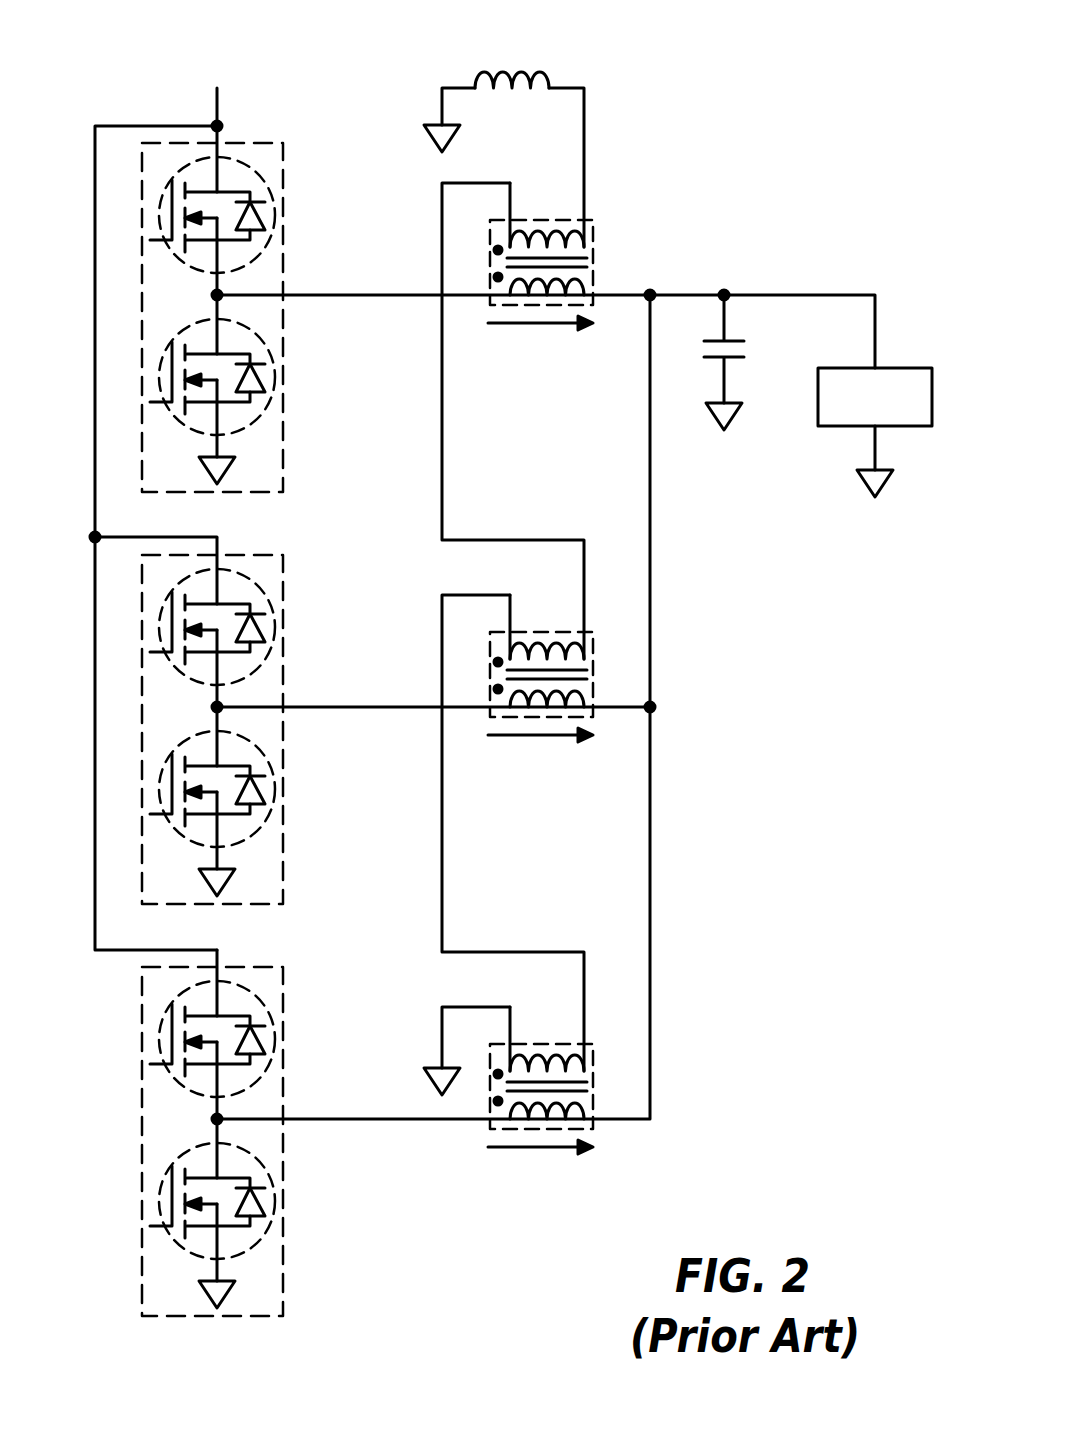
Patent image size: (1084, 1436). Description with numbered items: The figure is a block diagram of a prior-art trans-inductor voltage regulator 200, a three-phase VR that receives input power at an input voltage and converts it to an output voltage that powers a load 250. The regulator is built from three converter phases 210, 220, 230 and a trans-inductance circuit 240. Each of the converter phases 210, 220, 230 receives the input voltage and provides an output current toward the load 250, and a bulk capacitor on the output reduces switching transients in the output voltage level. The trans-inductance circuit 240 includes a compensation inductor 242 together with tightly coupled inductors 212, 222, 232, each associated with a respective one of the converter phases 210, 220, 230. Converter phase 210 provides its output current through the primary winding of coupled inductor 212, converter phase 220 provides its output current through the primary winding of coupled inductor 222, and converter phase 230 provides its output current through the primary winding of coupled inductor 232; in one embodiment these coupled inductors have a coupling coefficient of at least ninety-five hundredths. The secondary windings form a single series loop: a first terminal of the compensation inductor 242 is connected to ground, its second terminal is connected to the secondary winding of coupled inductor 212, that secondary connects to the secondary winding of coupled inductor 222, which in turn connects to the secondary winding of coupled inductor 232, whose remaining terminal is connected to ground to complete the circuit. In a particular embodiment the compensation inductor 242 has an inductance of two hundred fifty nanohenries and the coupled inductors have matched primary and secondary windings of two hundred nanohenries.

The trans-inductor voltage regulator 200 is at (88, 1354).
The converter phase 210 is at (268, 493).
The converter phase 220 is at (268, 905).
The converter phase 230 is at (268, 1317).
The coupled inductor 212 is at (594, 222).
The coupled inductor 222 is at (594, 634).
The coupled inductor 232 is at (594, 1046).
The trans-inductance circuit 240 is at (436, 66).
The compensation inductor 242 is at (554, 85).
The load 250 is at (920, 368).